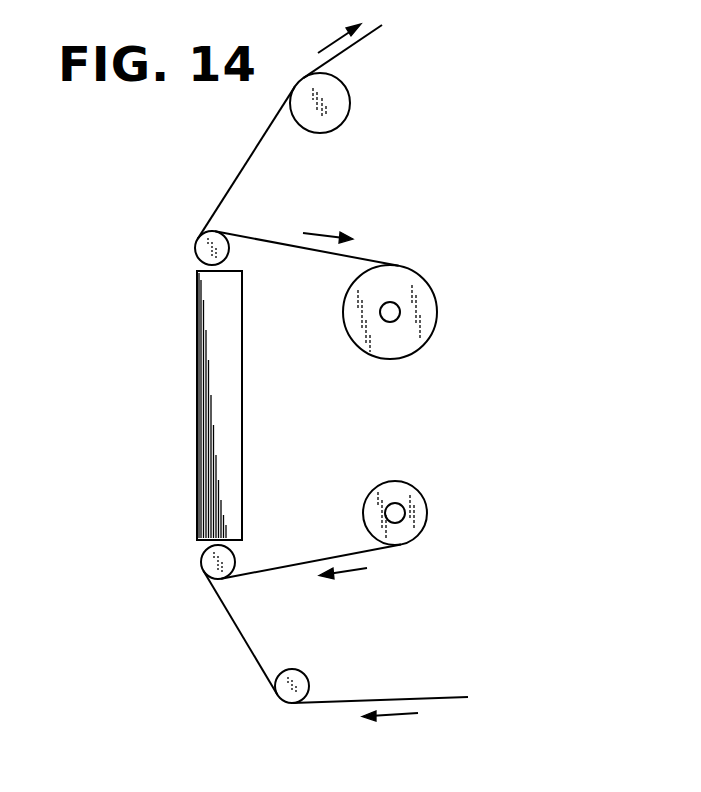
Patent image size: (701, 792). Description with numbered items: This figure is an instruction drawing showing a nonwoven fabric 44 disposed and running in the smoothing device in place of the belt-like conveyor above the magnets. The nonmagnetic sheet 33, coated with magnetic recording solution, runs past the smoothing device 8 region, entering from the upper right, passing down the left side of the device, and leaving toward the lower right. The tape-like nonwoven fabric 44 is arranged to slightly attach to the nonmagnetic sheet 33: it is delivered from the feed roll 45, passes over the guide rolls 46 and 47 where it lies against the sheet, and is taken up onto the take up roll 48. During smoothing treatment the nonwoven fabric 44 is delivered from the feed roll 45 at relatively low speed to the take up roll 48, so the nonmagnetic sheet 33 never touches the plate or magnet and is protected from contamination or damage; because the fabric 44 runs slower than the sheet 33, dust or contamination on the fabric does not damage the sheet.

The apparatus / pressure plate 8 is at (189, 321).
The nonmagnetic sheet 33 is at (237, 176).
The nonwoven fabric 44 is at (282, 247).
The feed roll 45 is at (409, 491).
The guide roll 46 is at (225, 568).
The guide roll 47 is at (214, 240).
The take up roll 48 is at (413, 290).